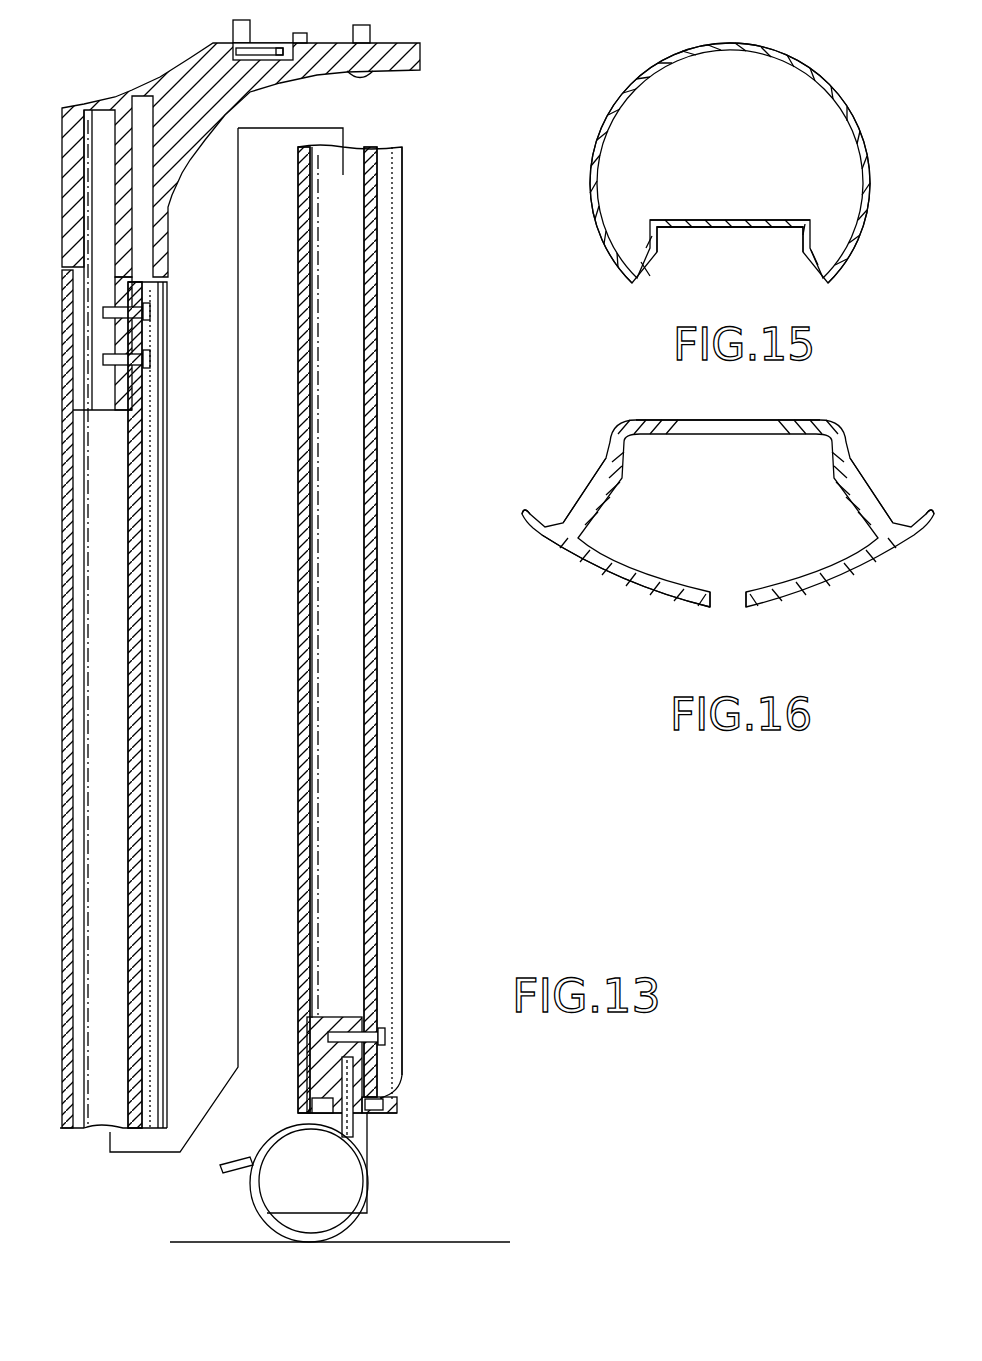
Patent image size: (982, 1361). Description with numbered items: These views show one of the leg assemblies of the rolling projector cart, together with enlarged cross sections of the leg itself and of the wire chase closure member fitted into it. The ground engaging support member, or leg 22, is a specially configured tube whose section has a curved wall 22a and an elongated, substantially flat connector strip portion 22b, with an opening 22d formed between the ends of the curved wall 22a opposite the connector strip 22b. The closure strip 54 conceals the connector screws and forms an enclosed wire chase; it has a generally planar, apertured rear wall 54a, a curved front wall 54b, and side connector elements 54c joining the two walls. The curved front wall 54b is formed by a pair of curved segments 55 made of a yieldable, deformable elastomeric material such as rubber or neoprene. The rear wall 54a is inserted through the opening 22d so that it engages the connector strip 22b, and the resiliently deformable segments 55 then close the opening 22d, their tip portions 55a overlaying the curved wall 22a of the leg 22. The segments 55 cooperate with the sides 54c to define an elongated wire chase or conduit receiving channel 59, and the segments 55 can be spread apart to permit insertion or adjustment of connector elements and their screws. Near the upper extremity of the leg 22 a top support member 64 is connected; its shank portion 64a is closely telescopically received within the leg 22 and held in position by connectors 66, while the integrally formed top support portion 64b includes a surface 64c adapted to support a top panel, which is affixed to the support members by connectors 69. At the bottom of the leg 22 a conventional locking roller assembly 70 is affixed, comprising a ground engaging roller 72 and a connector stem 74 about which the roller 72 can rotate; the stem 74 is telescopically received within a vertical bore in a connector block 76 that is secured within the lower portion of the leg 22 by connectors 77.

In FIG. 13, the leg 22 is at (82, 1133).
In FIG. 15, the leg 22 is at (822, 71).
In FIG. 15, the curved wall 22a is at (620, 97).
In FIG. 13, the connector strip portion 22b is at (128, 615).
In FIG. 15, the connector strip portion 22b is at (688, 222).
In FIG. 15, the opening 22d is at (735, 250).
In FIG. 13, the closure strip 54 is at (405, 297).
In FIG. 16, the closure strip 54 is at (835, 409).
In FIG. 13, the rear wall 54a is at (376, 238).
In FIG. 16, the rear wall 54a is at (640, 423).
In FIG. 16, the curved front wall 54b is at (618, 588).
In FIG. 16, the side connector elements 54c is at (597, 500).
In FIG. 13, the curved segments 55 is at (387, 396).
In FIG. 16, the curved segments 55 is at (780, 600).
In FIG. 16, the tip portion 55a is at (530, 523).
In FIG. 13, the wire chase channel 59 is at (155, 987).
In FIG. 16, the wire chase channel 59 is at (728, 484).
In FIG. 13, the top support member 64 is at (184, 60).
In FIG. 13, the shank portion 64a is at (122, 389).
In FIG. 13, the top support portion 64b is at (250, 85).
In FIG. 13, the surface 64c is at (400, 43).
In FIG. 13, the connectors 66 is at (150, 360).
In FIG. 13, the connectors 69 is at (366, 77).
In FIG. 13, the locking roller assembly 70 is at (388, 1151).
In FIG. 13, the ground engaging roller 72 is at (340, 1226).
In FIG. 13, the connector stem 74 is at (354, 1076).
In FIG. 13, the connector block 76 is at (313, 1080).
In FIG. 13, the connectors 77 is at (386, 1037).